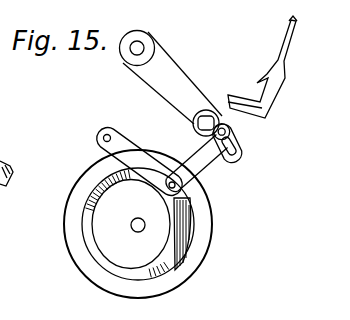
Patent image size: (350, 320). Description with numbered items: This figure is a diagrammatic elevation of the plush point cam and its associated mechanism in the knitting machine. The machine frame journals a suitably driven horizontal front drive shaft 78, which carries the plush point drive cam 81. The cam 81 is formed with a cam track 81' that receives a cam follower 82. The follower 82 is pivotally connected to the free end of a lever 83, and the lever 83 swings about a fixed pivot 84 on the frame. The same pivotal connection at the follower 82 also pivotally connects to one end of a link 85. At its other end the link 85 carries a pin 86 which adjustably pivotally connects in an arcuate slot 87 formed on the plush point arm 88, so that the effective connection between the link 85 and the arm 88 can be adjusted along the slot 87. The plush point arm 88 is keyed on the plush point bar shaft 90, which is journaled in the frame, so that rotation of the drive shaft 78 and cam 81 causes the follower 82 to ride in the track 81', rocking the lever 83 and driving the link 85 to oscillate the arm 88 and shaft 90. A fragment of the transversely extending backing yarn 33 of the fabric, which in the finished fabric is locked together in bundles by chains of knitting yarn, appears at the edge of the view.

The plush point bar shaft 90 is at (142, 44).
The plush point arm 88 is at (187, 90).
The pin 86 is at (228, 132).
The arcuate slot 87 is at (241, 155).
The link 85 is at (227, 172).
The lever 83 is at (126, 152).
The fixed pivot 84 is at (101, 143).
The cam follower 82 is at (170, 175).
The backing yarn 33 is at (0, 158).
The plush point drive cam 81 is at (160, 224).
The front drive shaft 78 is at (135, 231).
The cam track 81' is at (213, 230).